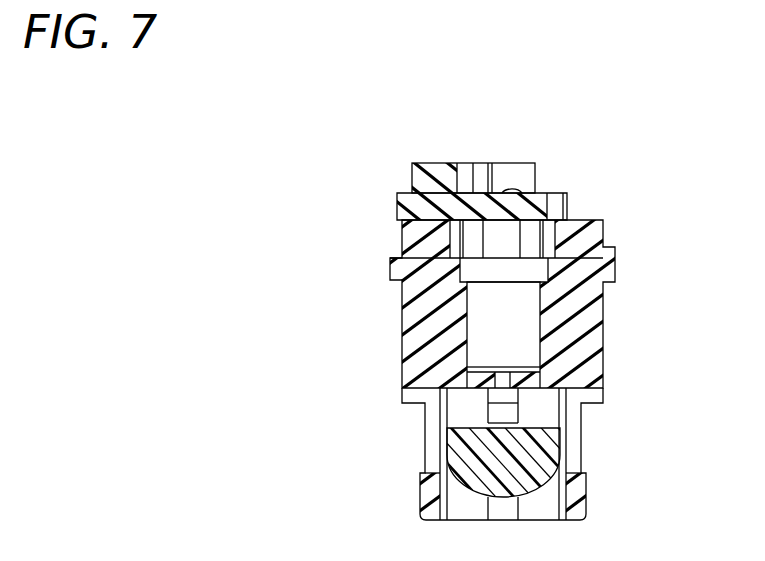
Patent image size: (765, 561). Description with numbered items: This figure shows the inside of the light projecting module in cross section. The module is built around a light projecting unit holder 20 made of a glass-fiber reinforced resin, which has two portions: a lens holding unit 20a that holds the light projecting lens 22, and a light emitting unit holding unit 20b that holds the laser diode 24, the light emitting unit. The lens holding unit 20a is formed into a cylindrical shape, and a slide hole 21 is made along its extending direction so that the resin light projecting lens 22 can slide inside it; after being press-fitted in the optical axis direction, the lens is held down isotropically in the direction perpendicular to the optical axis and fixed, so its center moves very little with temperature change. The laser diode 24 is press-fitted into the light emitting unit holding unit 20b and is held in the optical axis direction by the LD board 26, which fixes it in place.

The light projecting unit holder 20 is at (541, 280).
The lens holding unit 20a is at (665, 328).
The light emitting unit holding unit 20b is at (578, 345).
The slide hole 21 is at (503, 418).
The light projecting lens 22 is at (473, 448).
The laser diode 24 is at (500, 303).
The LD board 26 is at (412, 207).